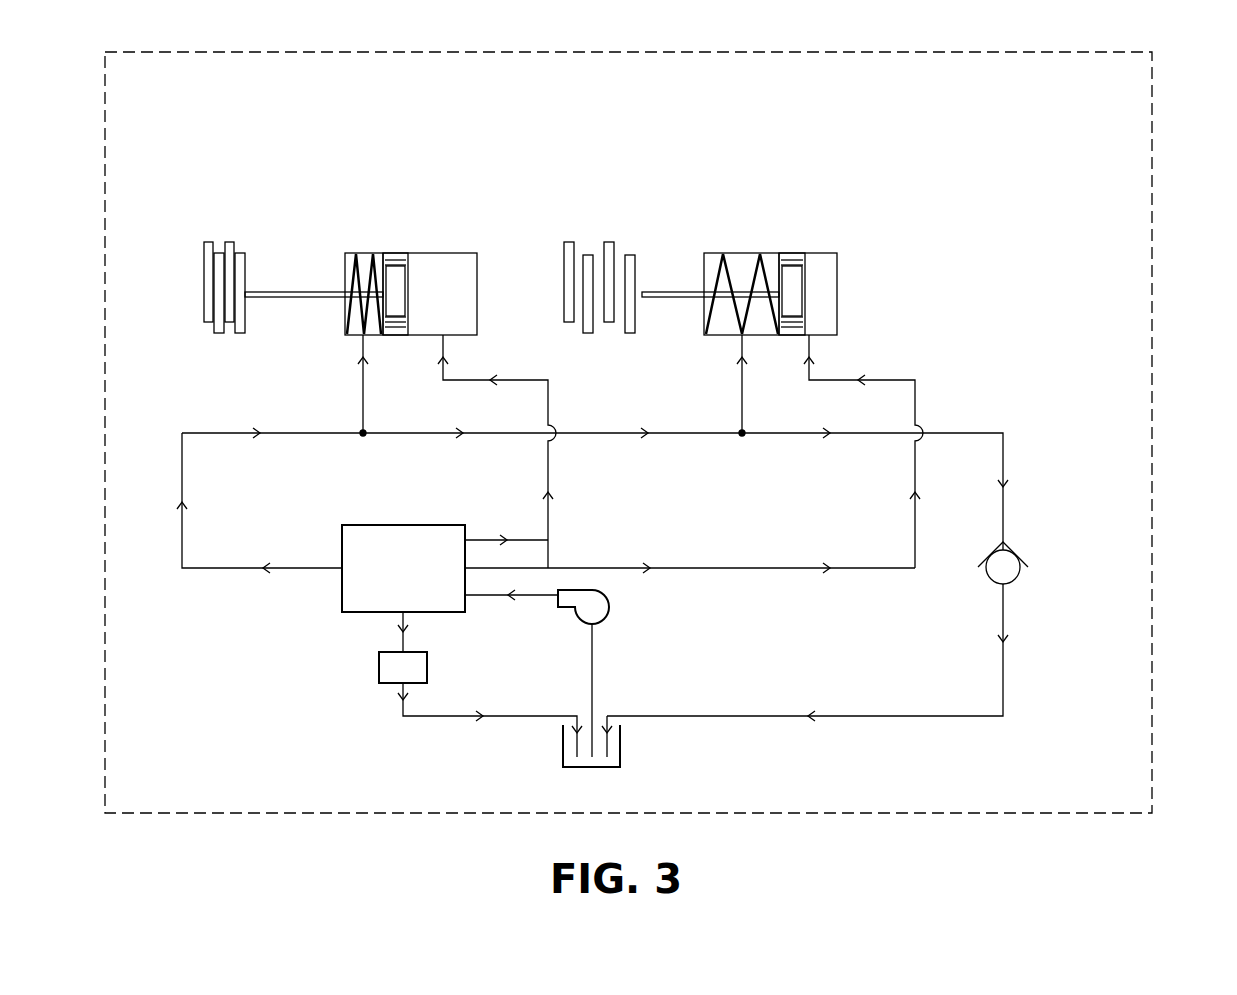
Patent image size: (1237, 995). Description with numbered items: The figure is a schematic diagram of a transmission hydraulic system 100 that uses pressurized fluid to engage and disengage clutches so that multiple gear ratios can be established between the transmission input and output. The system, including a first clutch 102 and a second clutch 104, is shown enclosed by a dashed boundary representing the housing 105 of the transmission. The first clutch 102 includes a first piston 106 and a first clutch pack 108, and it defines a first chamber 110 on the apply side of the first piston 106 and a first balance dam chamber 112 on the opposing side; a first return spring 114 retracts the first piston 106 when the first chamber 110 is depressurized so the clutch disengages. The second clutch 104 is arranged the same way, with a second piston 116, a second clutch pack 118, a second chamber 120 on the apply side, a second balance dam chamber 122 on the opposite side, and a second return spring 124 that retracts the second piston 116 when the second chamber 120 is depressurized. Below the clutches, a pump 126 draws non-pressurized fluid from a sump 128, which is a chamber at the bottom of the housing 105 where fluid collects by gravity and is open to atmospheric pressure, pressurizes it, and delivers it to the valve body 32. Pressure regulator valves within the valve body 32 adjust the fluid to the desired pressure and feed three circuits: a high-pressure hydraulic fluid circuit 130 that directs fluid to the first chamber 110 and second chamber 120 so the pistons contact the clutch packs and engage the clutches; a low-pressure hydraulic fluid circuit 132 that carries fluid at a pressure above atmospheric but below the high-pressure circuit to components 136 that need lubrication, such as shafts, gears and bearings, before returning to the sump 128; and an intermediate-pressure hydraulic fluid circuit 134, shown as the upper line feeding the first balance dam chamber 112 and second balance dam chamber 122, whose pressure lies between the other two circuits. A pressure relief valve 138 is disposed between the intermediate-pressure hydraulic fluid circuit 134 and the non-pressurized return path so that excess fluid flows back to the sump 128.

The transmission hydraulic system 100 is at (1095, 128).
The housing 105 is at (596, 52).
The first clutch 102 is at (298, 155).
The second clutch 104 is at (748, 155).
The first clutch pack 108 is at (260, 233).
The second clutch pack 118 is at (553, 238).
The first chamber 110 is at (455, 295).
The second chamber 120 is at (823, 295).
The first piston 106 is at (397, 258).
The second piston 116 is at (792, 258).
The first balance dam chamber 112 is at (362, 262).
The second balance dam chamber 122 is at (740, 270).
The first return spring 114 is at (350, 277).
The second return spring 124 is at (718, 275).
The intermediate-pressure hydraulic fluid circuit 134 is at (688, 420).
The high-pressure hydraulic fluid circuit 130 is at (548, 518).
The valve body 32 is at (410, 525).
The low-pressure hydraulic fluid circuit 132 is at (403, 645).
The components 136 is at (379, 668).
The pump 126 is at (612, 605).
The sump 128 is at (620, 740).
The pressure relief valve 138 is at (1022, 592).